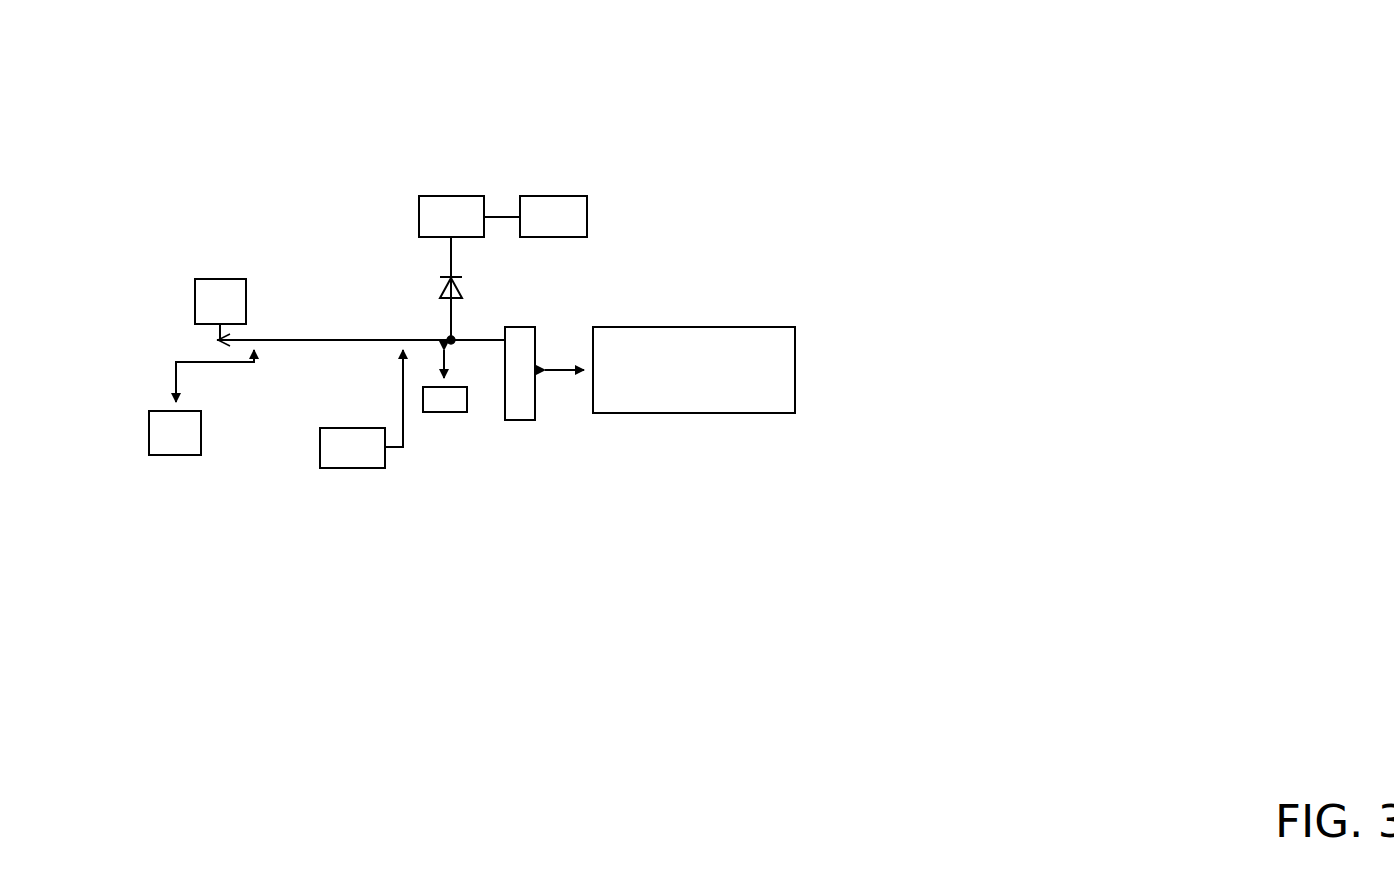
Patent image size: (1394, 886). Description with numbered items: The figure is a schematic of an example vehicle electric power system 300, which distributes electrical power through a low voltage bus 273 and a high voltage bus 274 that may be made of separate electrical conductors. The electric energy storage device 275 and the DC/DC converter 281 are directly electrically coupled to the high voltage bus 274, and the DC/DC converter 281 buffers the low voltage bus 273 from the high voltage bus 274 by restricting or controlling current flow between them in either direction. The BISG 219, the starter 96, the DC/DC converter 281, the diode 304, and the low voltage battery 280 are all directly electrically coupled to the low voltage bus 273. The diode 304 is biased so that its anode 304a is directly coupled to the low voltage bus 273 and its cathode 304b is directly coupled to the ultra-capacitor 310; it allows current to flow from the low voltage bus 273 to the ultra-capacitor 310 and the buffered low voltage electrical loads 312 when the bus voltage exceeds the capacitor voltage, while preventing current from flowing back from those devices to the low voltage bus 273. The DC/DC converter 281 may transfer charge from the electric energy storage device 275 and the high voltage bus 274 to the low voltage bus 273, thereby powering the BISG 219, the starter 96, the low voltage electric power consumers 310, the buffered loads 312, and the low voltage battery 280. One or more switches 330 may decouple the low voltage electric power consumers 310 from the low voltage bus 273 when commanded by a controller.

The vehicle electric power system 300 is at (130, 72).
The low voltage bus 273 is at (298, 338).
The switches 330 is at (214, 335).
The ultra-capacitor 310 is at (339, 268).
The buffered low voltage electrical loads 312 is at (535, 216).
The diode 304 is at (439, 290).
The anode 304a is at (451, 300).
The cathode 304b is at (451, 277).
The starter 96 is at (201, 402).
The BISG 219 is at (320, 468).
The low voltage battery 280 is at (467, 405).
The DC/DC converter 281 is at (527, 420).
The high voltage bus 274 is at (568, 358).
The electric energy storage device 275 is at (635, 326).